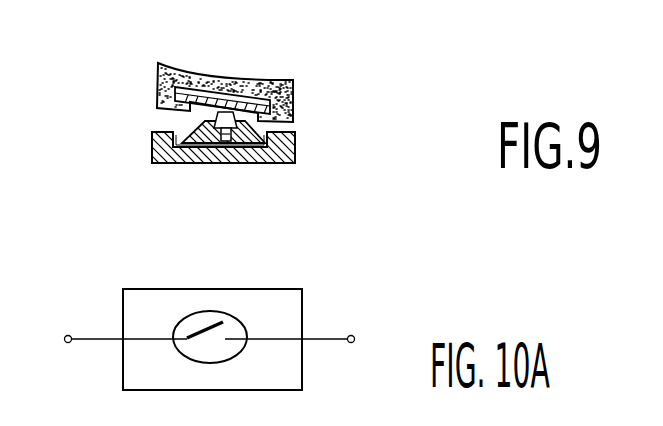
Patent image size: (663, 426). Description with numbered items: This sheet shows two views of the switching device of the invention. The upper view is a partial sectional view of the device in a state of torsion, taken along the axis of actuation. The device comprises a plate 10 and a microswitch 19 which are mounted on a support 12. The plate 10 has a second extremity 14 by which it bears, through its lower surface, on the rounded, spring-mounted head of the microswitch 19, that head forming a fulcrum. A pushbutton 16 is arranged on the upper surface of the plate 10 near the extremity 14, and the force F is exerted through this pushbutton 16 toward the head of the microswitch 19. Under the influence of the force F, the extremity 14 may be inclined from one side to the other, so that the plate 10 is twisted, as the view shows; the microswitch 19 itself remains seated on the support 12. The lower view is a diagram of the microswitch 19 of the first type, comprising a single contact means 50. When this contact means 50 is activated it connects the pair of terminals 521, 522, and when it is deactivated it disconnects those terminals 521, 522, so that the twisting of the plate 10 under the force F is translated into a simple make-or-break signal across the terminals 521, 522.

In FIG. 9, the plate 10 is at (197, 97).
In FIG. 9, the support 12 is at (155, 145).
In FIG. 9, the second extremity 14 is at (141, 84).
In FIG. 9, the pushbutton 16 is at (277, 100).
In FIG. 9, the microswitch 19 is at (193, 127).
In FIG. 10A, the microswitch 19 is at (158, 289).
In FIG. 9, the force F is at (258, 79).
In FIG. 10A, the single contact means 50 is at (204, 311).
In FIG. 10A, the terminal 521 is at (112, 364).
In FIG. 10A, the terminal 522 is at (309, 364).